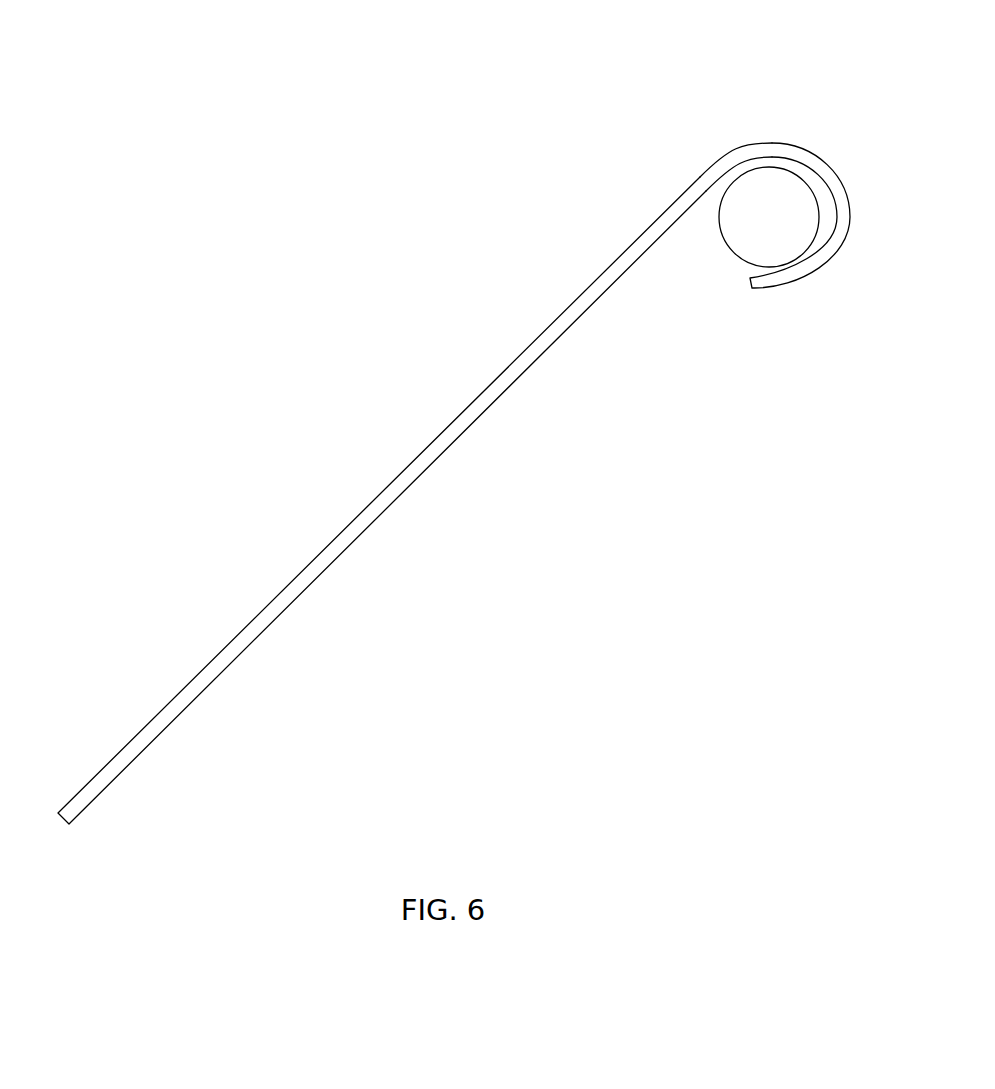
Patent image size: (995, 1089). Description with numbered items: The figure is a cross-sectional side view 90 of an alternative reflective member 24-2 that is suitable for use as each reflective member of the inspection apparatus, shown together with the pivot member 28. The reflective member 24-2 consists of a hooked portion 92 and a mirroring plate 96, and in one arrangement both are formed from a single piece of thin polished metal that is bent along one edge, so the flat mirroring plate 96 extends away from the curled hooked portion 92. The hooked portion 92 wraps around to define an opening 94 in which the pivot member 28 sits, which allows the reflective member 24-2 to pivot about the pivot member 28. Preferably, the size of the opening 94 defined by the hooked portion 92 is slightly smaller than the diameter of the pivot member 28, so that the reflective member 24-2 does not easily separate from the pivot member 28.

The cross-sectional side view 90 is at (221, 84).
The alternative reflective member 24-2 is at (482, 254).
The pivot member 28 is at (782, 229).
The hooked portion 92 is at (844, 197).
The opening 94 is at (687, 286).
The mirroring plate 96 is at (237, 637).